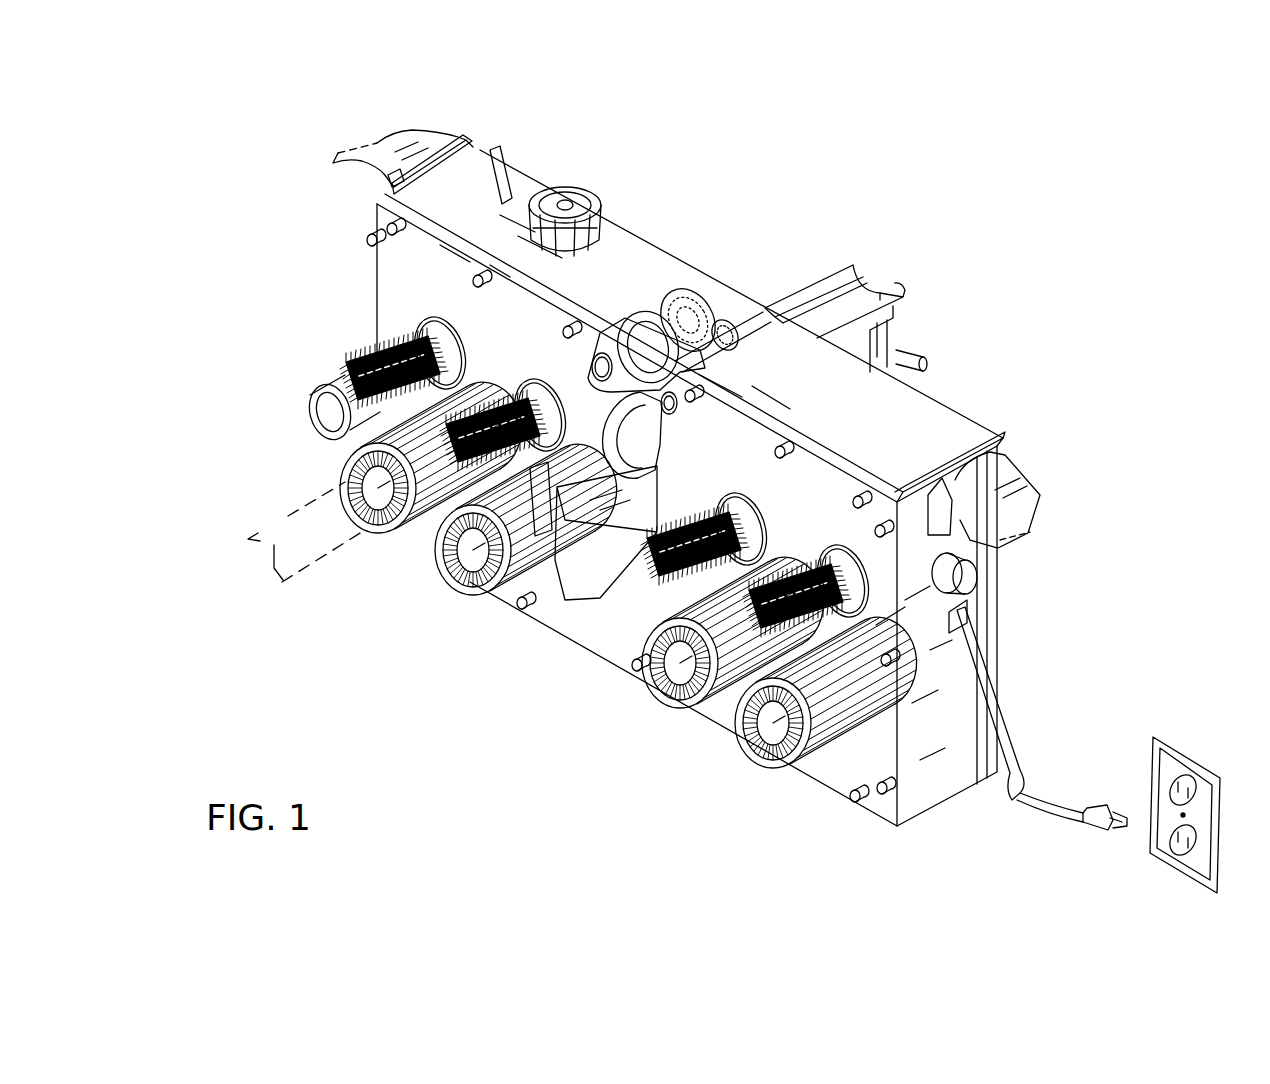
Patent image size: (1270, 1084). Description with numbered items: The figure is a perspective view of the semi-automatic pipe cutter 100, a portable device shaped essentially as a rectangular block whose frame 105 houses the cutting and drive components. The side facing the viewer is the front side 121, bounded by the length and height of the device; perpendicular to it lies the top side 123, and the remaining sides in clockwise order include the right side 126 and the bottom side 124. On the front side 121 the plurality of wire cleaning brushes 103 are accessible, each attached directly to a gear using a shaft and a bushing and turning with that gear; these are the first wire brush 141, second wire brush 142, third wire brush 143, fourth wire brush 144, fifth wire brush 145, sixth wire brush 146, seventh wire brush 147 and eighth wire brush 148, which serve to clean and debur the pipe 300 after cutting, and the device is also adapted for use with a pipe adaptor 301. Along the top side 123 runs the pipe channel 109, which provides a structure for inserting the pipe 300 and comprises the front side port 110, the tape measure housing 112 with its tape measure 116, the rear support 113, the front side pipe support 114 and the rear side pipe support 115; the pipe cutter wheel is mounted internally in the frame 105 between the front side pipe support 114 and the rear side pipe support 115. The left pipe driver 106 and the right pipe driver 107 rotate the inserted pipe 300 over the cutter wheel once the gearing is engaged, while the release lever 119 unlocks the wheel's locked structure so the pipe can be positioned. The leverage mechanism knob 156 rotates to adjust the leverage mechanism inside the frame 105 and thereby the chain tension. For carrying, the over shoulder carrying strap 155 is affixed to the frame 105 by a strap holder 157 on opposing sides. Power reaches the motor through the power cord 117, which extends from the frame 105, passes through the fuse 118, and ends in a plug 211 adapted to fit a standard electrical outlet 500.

The semi-automatic pipe cutter 100 is at (238, 152).
The plurality of wire cleaning brushes 103 is at (325, 398).
The frame 105 is at (925, 435).
The left pipe driver 106 is at (663, 300).
The right pipe driver 107 is at (726, 320).
The pipe channel 109 is at (884, 278).
The front side port 110 is at (605, 345).
The tape measure housing 112 is at (600, 590).
The rear support 113 is at (912, 330).
The front side pipe support 114 is at (655, 445).
The rear side pipe support 115 is at (905, 347).
The tape measure 116 is at (538, 560).
The power cord 117 is at (1012, 775).
The fuse 118 is at (960, 578).
The release lever 119 is at (503, 167).
The front side 121 is at (377, 303).
The top side 123 is at (948, 455).
The bottom side 124 is at (868, 814).
The right side 126 is at (950, 735).
The first wire brush 141 is at (415, 340).
The second wire brush 142 is at (522, 395).
The third wire brush 143 is at (790, 507).
The fourth wire brush 144 is at (820, 562).
The fifth wire brush 145 is at (775, 760).
The sixth wire brush 146 is at (690, 715).
The seventh wire brush 147 is at (482, 585).
The eighth wire brush 148 is at (355, 470).
The over shoulder carrying strap 155 is at (412, 140).
The leverage mechanism knob 156 is at (574, 194).
The strap holder 157 is at (388, 182).
The plug 211 is at (1098, 832).
The pipe 300 is at (290, 526).
The pipe adaptor 301 is at (315, 424).
The standard electrical outlet 500 is at (1183, 757).